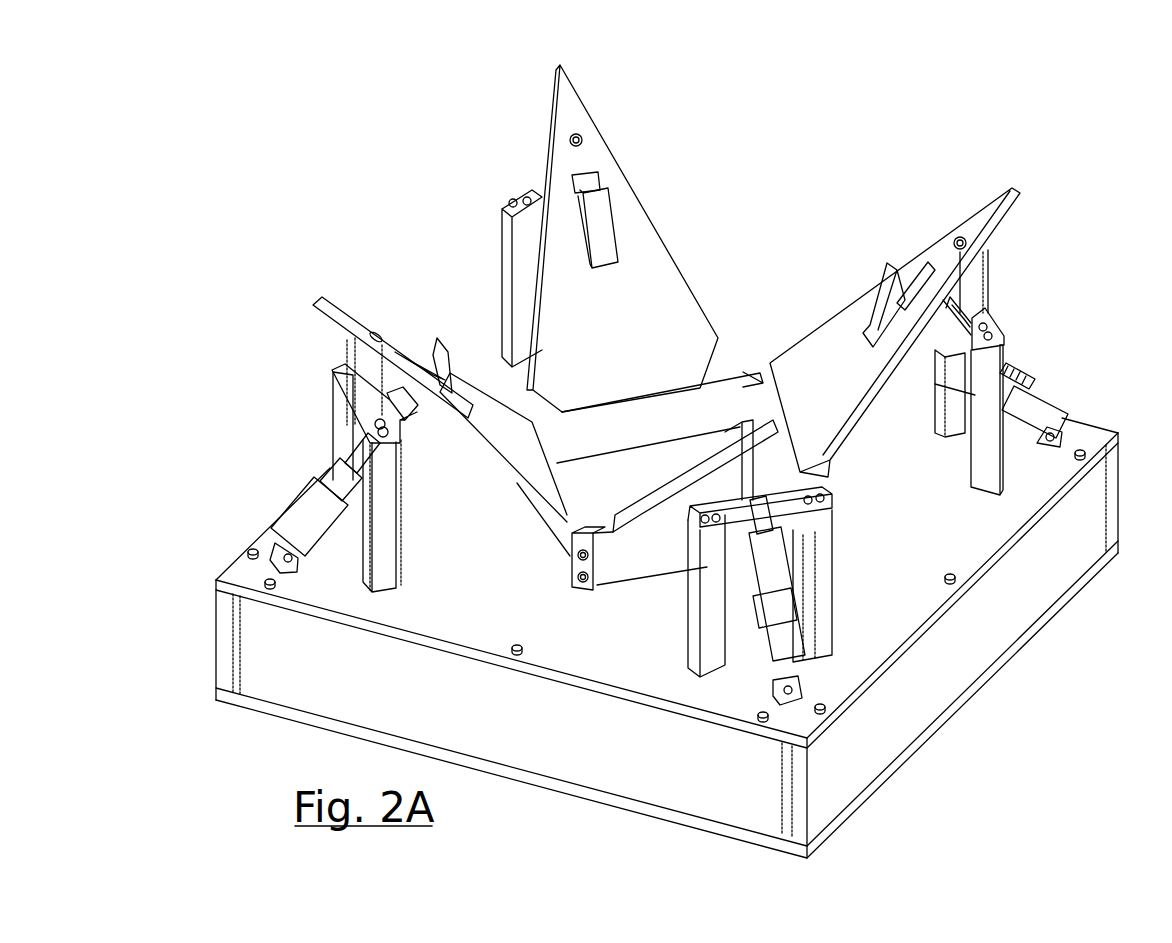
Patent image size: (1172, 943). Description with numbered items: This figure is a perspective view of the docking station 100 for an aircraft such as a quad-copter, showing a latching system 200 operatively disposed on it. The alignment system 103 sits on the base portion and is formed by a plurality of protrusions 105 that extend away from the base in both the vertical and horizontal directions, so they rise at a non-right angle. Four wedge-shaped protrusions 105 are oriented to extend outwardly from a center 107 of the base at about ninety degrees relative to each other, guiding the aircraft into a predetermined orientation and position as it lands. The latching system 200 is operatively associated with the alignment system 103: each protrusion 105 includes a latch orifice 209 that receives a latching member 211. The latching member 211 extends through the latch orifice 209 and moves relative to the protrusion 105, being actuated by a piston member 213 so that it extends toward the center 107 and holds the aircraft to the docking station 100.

The docking station 100 is at (667, 444).
The alignment system 103 is at (377, 323).
The protrusions 105 is at (570, 109).
The center 107 is at (663, 482).
The latching system 200 is at (322, 482).
The latch orifice 209 is at (913, 270).
The latching member 211 is at (602, 218).
The piston member 213 is at (290, 520).